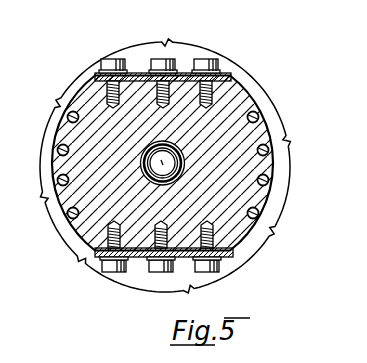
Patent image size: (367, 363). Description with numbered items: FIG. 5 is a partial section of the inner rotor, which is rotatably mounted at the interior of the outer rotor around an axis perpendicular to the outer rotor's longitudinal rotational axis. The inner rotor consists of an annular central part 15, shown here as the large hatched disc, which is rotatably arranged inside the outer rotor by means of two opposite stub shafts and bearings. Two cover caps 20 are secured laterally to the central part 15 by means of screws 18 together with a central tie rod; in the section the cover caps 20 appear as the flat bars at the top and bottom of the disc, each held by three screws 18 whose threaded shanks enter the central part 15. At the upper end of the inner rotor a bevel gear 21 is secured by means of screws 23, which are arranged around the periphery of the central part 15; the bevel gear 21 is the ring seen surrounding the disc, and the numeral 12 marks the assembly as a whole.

The assembly 12 is at (148, 171).
The annular central part 15 is at (252, 75).
The screws 18 is at (154, 60).
The cover caps 20 is at (230, 62).
The bevel gear 21 is at (52, 216).
The screws 23 is at (72, 110).